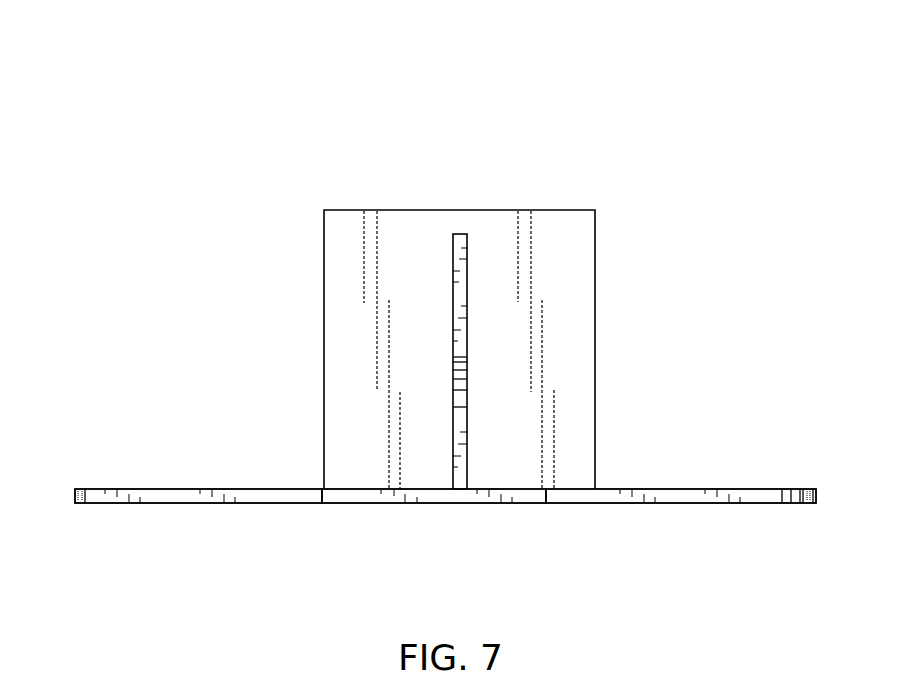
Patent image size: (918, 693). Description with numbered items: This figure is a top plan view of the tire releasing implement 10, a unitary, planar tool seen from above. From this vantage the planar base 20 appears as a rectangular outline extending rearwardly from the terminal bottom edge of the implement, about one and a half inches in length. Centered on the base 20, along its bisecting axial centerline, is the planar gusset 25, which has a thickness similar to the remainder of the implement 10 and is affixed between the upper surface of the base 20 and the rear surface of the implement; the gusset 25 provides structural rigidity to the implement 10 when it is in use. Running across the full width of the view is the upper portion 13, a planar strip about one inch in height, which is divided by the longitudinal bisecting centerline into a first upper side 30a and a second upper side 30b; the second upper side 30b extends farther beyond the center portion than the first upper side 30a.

The tire releasing implement 10 is at (105, 178).
The upper portion 13 is at (460, 497).
The base 20 is at (573, 228).
The gusset 25 is at (457, 243).
The first upper side 30a is at (770, 497).
The second upper side 30b is at (102, 498).